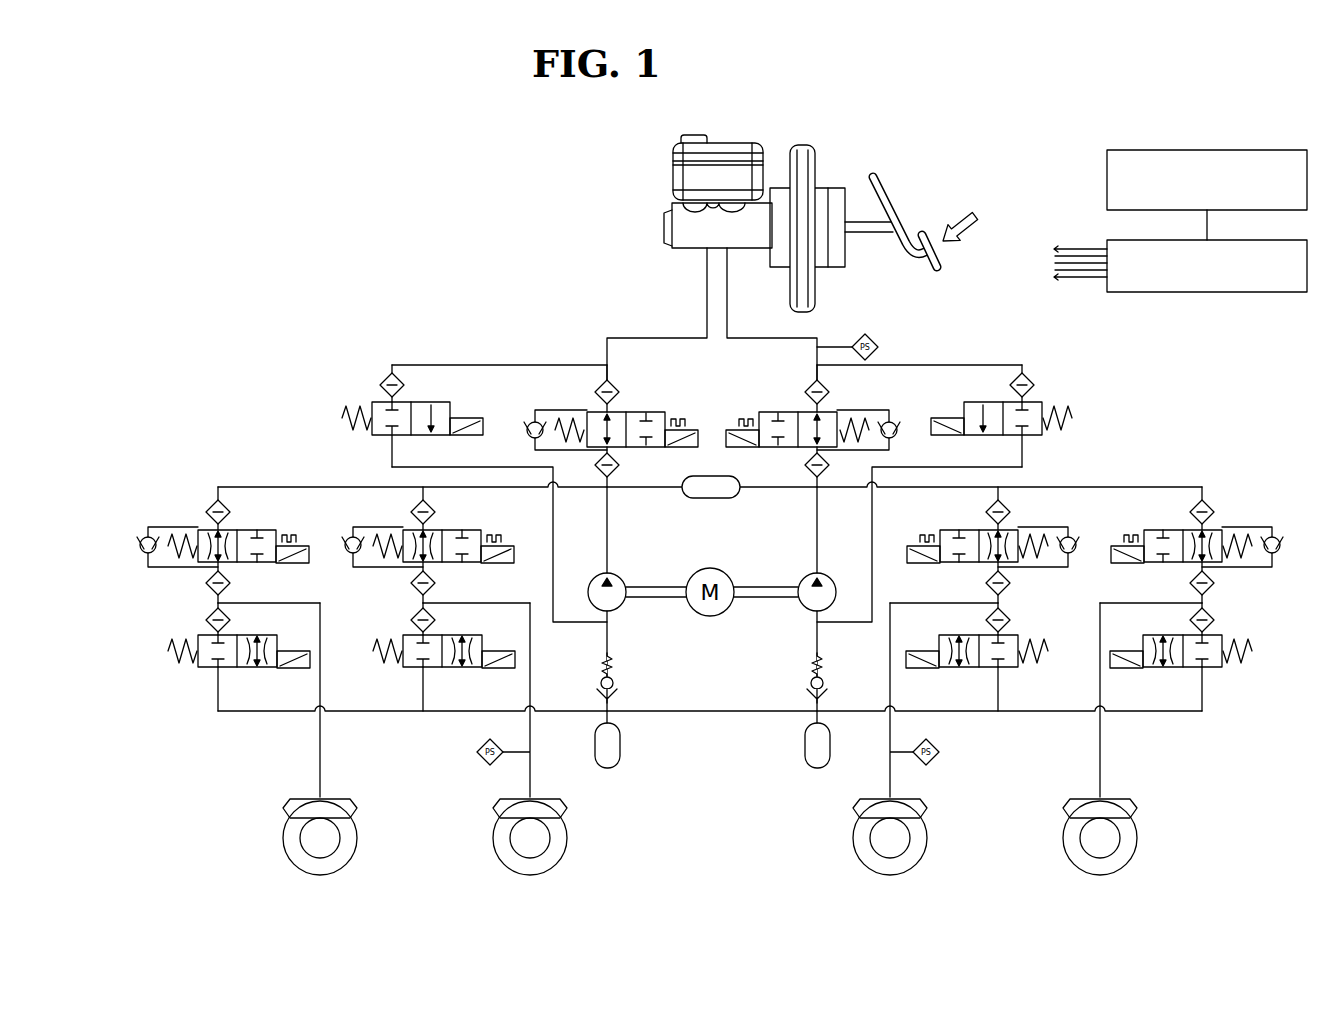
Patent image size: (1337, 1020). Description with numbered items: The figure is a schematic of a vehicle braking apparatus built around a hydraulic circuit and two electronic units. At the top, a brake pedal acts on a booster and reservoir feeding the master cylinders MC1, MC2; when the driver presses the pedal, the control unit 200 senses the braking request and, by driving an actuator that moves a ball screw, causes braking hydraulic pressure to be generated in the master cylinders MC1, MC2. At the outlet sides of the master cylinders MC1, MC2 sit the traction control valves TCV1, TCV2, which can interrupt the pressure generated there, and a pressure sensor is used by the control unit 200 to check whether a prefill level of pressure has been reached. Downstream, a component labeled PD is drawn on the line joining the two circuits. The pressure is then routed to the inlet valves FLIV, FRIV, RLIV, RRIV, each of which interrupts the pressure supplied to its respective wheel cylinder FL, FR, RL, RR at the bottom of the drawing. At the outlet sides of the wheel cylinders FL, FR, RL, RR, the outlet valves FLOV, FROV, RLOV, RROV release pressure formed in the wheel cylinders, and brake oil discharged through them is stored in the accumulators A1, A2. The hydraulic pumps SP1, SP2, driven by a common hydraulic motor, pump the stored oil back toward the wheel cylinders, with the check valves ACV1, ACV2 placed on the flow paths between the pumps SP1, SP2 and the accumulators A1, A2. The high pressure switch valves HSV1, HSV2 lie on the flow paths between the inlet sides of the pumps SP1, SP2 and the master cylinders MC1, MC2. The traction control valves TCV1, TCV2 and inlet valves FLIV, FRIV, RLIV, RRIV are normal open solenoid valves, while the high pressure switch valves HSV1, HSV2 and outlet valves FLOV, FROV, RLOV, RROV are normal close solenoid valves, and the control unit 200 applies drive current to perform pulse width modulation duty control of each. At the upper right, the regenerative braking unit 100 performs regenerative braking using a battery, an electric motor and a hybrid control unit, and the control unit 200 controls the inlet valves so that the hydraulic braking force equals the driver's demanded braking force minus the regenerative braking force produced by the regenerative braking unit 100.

The regenerative braking unit 100 is at (1107, 174).
The control unit 200 is at (1207, 292).
The master cylinder MC1 is at (772, 314).
The master cylinder MC2 is at (657, 314).
The high pressure switch valve HSV1 is at (944, 493).
The high pressure switch valve HSV2 is at (474, 493).
The traction control valve TCV1 is at (813, 426).
The traction control valve TCV2 is at (611, 426).
The pressure damper PD is at (710, 487).
The hydraulic pump SP1 is at (785, 599).
The hydraulic pump SP2 is at (637, 599).
The check valve ACV1 is at (790, 678).
The check valve ACV2 is at (629, 678).
The accumulator A1 is at (817, 753).
The accumulator A2 is at (607, 753).
The inlet valve RLIV is at (228, 545).
The inlet valve FRIV is at (436, 545).
The inlet valve FLIV is at (984, 545).
The inlet valve RRIV is at (1191, 545).
The outlet valve RLOV is at (230, 657).
The outlet valve FROV is at (438, 657).
The outlet valve FLOV is at (977, 657).
The outlet valve RROV is at (1181, 657).
The wheel cylinder RL is at (320, 739).
The wheel cylinder FR is at (522, 739).
The wheel cylinder FL is at (896, 739).
The wheel cylinder RR is at (1100, 739).